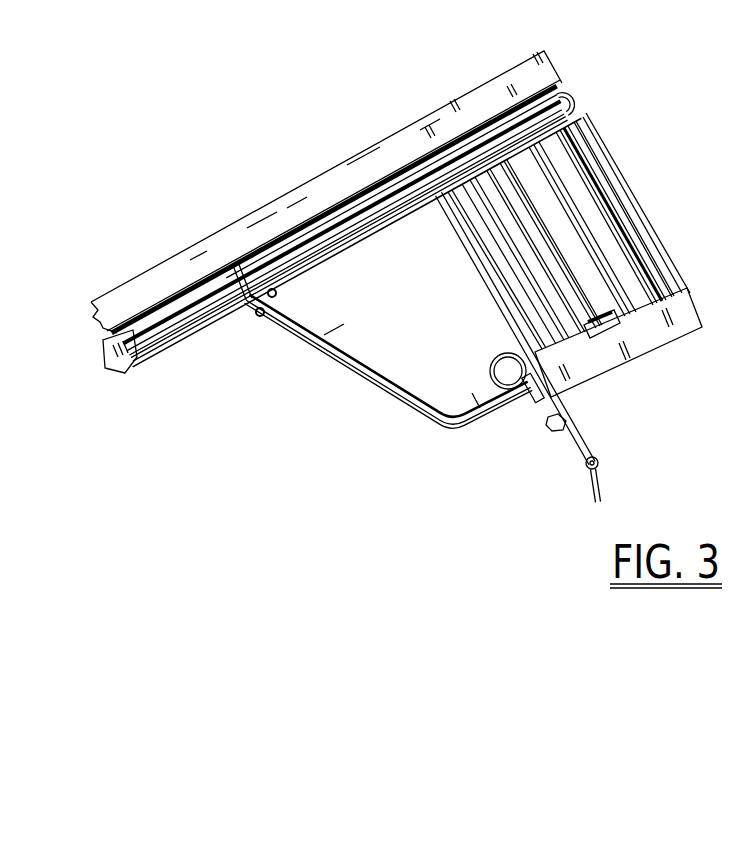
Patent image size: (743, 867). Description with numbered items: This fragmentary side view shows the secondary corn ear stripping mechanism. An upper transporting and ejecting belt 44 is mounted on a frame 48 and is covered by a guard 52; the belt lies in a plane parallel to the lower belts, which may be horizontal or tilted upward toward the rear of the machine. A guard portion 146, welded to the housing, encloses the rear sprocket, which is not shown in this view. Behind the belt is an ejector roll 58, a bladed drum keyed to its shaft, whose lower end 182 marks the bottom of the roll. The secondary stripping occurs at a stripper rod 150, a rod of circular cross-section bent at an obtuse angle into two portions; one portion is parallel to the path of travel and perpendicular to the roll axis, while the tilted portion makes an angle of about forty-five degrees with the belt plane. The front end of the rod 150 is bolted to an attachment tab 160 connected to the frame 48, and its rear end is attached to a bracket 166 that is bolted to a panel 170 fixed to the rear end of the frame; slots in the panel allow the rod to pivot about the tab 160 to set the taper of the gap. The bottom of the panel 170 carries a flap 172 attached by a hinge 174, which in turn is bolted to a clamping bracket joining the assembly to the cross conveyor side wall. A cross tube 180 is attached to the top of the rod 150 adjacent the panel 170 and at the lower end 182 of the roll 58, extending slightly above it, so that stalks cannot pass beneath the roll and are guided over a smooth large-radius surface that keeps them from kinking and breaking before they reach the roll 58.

The guard portion 146 is at (546, 50).
The frame 48 is at (318, 189).
The guard 52 is at (188, 336).
The upper belt 44 is at (127, 368).
The attachment tab 160 is at (235, 293).
The stripper rod 150 is at (356, 372).
The ejector roll 58 is at (620, 208).
The lower end of ejector rolls 182 is at (655, 288).
The cross tube 180 is at (498, 353).
The panel 170 is at (582, 433).
The bracket 166 is at (541, 401).
The hinge 174 is at (599, 463).
The flap 172 is at (601, 496).